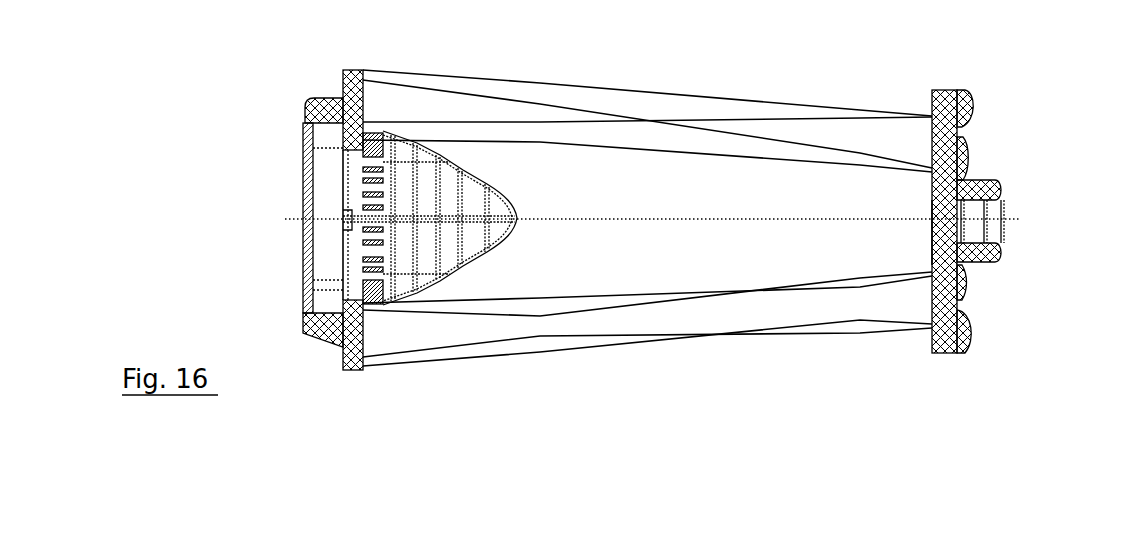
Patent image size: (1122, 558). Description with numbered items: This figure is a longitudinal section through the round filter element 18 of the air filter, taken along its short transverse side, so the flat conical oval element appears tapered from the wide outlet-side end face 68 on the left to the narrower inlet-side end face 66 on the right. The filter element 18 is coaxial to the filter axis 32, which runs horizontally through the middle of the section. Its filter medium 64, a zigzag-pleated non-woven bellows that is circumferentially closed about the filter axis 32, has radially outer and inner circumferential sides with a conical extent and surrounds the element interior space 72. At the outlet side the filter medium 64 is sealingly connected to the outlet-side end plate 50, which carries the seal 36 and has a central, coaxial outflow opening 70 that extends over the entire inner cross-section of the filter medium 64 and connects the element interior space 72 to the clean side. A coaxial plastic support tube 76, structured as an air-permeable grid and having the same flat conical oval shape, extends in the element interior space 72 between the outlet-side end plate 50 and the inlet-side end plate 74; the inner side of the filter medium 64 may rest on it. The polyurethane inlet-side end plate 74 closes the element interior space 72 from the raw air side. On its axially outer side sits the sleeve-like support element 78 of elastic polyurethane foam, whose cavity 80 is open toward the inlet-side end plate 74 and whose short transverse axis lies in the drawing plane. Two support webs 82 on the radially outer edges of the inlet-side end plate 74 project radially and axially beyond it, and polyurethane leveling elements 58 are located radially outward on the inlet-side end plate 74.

The filter element 18 is at (216, 104).
The seal 36 is at (321, 109).
The outlet-side end face 68 is at (346, 70).
The outlet-side end plate 50 is at (345, 348).
The outflow opening 70 is at (348, 245).
The support tube 76 is at (460, 243).
The filter axis 32 is at (637, 222).
The element interior space 72 is at (576, 206).
The filter medium 64 is at (712, 338).
The inlet-side end face 66 is at (945, 355).
The inlet-side end plate 74 is at (932, 238).
The leveling elements 58 is at (1012, 395).
The support webs 82 is at (1050, 310).
The cavity 80 is at (978, 225).
The support element 78 is at (987, 253).